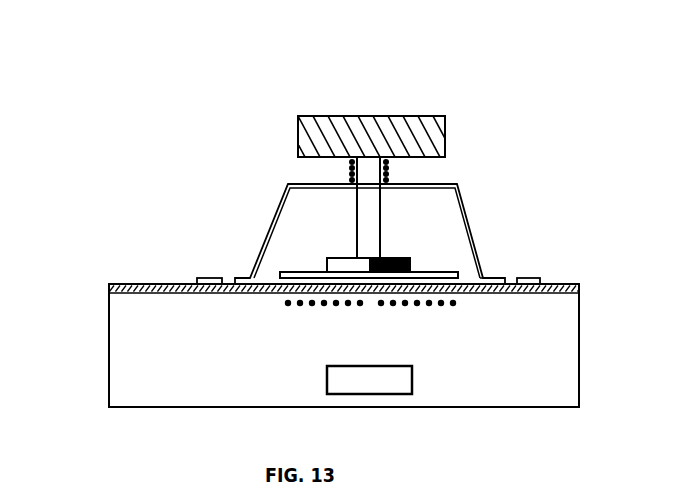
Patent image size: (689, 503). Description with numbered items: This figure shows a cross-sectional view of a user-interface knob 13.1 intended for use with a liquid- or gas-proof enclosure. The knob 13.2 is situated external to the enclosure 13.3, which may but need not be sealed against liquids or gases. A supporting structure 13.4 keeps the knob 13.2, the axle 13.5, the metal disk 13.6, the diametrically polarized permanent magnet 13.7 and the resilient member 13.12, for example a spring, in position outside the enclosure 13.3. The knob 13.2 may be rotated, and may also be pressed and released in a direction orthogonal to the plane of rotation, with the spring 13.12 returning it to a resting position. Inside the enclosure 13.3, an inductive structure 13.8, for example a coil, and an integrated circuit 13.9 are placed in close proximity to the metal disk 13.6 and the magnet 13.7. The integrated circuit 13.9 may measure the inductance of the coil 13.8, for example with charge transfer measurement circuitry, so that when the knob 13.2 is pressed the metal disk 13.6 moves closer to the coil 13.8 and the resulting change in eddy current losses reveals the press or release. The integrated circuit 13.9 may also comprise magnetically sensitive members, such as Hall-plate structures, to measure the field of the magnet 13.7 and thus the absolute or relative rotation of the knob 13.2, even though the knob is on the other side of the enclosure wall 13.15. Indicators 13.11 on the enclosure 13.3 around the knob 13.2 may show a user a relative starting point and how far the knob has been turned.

The user-interface knob 13.1 is at (174, 60).
The knob 13.2 is at (445, 113).
The enclosure 13.3 is at (108, 308).
The supporting structure 13.4 is at (283, 196).
The axle 13.5 is at (378, 207).
The metal disk 13.6 is at (311, 273).
The diametrically polarized permanent magnet 13.7 is at (405, 258).
The inductive structure 13.8 is at (290, 307).
The integrated circuit 13.9 is at (383, 390).
The indicators 13.11 is at (200, 280).
The resilient member 13.12 is at (390, 168).
The enclosure wall 13.15 is at (485, 292).